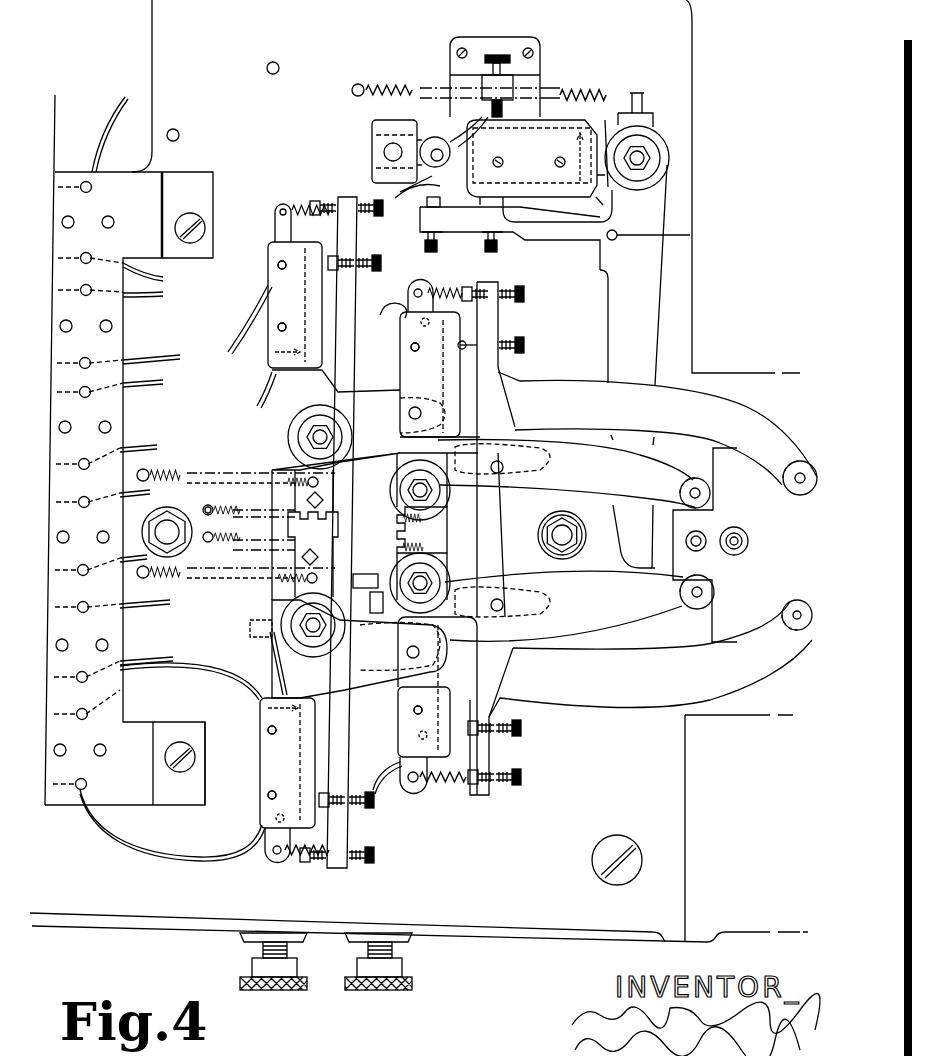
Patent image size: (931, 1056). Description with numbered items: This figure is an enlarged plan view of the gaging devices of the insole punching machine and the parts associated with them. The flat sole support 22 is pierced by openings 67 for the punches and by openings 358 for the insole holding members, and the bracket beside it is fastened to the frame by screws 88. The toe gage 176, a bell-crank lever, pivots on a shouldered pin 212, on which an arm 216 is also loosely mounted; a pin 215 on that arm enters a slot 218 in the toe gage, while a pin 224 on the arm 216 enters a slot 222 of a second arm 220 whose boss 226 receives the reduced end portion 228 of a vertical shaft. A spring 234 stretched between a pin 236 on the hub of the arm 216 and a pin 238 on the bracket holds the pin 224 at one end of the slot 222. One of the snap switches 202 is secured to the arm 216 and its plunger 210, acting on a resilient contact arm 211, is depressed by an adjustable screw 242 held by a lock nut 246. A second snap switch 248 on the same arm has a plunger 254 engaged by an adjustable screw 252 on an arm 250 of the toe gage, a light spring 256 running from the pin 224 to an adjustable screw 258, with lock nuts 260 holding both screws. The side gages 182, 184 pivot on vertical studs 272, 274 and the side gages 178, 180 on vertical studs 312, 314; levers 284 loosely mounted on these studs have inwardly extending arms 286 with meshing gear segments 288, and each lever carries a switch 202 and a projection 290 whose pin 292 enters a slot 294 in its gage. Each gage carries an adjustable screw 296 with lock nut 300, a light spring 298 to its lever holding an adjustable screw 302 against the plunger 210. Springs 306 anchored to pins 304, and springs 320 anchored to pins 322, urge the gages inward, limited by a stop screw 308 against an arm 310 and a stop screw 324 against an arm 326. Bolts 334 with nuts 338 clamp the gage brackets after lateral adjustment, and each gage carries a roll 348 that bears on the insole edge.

The sole support 22 is at (733, 487).
The openings 67 is at (737, 522).
The screws 88 is at (190, 213).
The toe gage 176 is at (620, 553).
The side gage 178 is at (618, 630).
The side gage 180 is at (663, 468).
The side gage 182 is at (748, 674).
The side gage 184 is at (743, 413).
The switches 202 is at (268, 258).
The plunger 210 is at (310, 283).
The resilient contact arm 211 is at (306, 316).
The shouldered pin 212 is at (650, 158).
The pin 215 is at (607, 236).
The arm 216 is at (452, 140).
The slot 218 is at (690, 235).
The arm 220 is at (425, 136).
The slot 222 is at (478, 151).
The pin 224 is at (503, 165).
The boss 226 is at (372, 131).
The reduced end portion 228 is at (384, 152).
The spring 234 is at (597, 91).
The pin 236 is at (644, 102).
The pin 238 is at (352, 91).
The adjustable screw 242 is at (498, 56).
The lock nut 246 is at (533, 90).
The snap switch 248 is at (600, 197).
The arm 250 is at (427, 222).
The adjustable screw 252 is at (516, 253).
The plunger 254 is at (516, 204).
The light spring 256 is at (428, 190).
The adjustable screw 258 is at (431, 253).
The lock nuts 260 is at (510, 238).
The vertical stud 272 is at (314, 629).
The vertical stud 274 is at (318, 433).
The levers 284 is at (280, 395).
The arms 286 is at (334, 490).
The gear segments 288 is at (398, 530).
The projection 290 is at (355, 456).
The pin 292 is at (409, 413).
The slot 294 is at (427, 433).
The adjustable screw 296 is at (380, 226).
The light spring 298 is at (301, 206).
The lock nut 300 is at (360, 207).
The adjustable screws 302 is at (381, 266).
The pins 304 is at (149, 472).
The springs 306 is at (210, 473).
The adjustable stop screw 308 is at (285, 991).
The arm 310 is at (250, 628).
The vertical stud 312 is at (433, 585).
The vertical stud 314 is at (428, 490).
The springs 320 is at (218, 505).
The pins 322 is at (206, 507).
The stop screw 324 is at (372, 614).
The arm 326 is at (352, 585).
The bolt 334 is at (562, 530).
The nut 338 is at (578, 540).
The roll 348 is at (683, 484).
The openings 358 is at (705, 549).